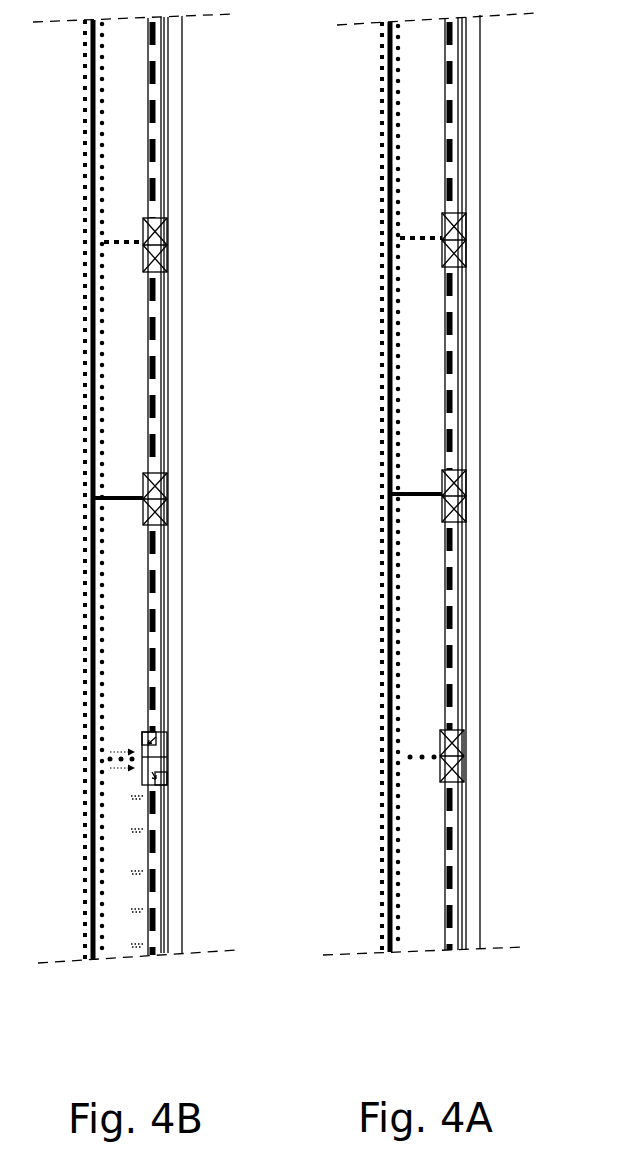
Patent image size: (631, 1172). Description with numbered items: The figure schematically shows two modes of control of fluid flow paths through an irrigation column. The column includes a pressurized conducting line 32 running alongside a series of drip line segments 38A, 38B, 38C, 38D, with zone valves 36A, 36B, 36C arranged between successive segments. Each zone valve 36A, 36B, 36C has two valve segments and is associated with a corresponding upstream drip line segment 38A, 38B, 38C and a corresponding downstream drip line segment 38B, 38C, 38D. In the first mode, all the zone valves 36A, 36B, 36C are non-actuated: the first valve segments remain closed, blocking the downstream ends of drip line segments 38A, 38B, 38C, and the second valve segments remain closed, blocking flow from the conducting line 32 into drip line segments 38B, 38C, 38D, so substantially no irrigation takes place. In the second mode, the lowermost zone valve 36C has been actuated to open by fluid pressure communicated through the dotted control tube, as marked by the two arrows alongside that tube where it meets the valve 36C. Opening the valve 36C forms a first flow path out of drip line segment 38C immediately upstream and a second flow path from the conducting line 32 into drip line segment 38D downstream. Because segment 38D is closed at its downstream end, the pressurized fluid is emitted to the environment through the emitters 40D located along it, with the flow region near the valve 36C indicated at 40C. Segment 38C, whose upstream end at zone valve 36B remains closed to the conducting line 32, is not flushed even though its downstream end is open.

In FIG. 4B, the pressurized conducting line 32 is at (170, 115).
In FIG. 4A, the pressurized conducting line 32 is at (473, 108).
In FIG. 4A, the zone valve 36A is at (468, 232).
In FIG. 4B, the zone valve 36B is at (172, 500).
In FIG. 4A, the zone valve 36B is at (470, 494).
In FIG. 4B, the zone valve 36C is at (175, 758).
In FIG. 4A, the zone valve 36C is at (468, 753).
In FIG. 4A, the drip line segment 38A is at (445, 185).
In FIG. 4B, the drip line segment 38B is at (76, 385).
In FIG. 4A, the drip line segment 38B is at (445, 382).
In FIG. 4B, the drip line segment 38C is at (145, 658).
In FIG. 4A, the drip line segment 38C is at (445, 613).
In FIG. 4B, the drip line segment 38D is at (147, 890).
In FIG. 4A, the drip line segment 38D is at (445, 848).
In FIG. 4B, the fluid flow 40C is at (67, 751).
In FIG. 4B, the emitters 40D is at (160, 795).